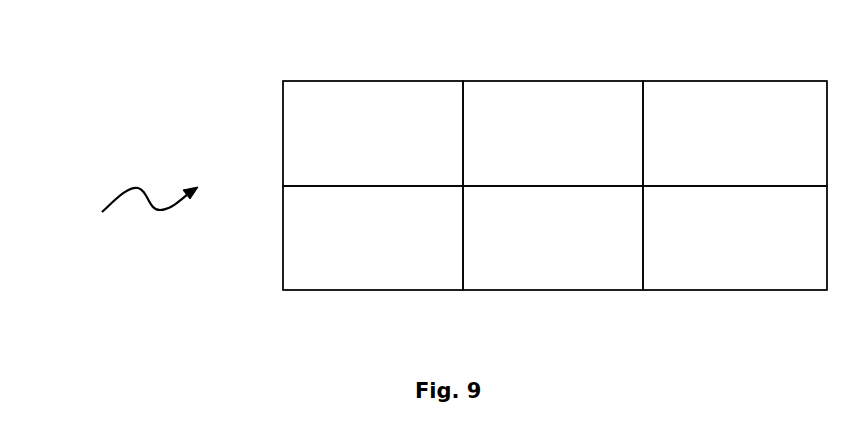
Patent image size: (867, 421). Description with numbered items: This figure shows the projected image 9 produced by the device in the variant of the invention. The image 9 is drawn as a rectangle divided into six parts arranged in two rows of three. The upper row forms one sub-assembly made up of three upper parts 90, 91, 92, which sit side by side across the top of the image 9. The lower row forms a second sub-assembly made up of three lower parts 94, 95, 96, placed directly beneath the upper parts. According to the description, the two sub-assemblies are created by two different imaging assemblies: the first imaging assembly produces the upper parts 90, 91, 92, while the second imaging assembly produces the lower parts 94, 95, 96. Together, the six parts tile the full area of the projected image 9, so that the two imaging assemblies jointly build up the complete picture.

The image 9 is at (117, 202).
The upper part 90 is at (403, 110).
The upper part 91 is at (574, 108).
The upper part 92 is at (747, 107).
The lower part 94 is at (375, 256).
The lower part 95 is at (545, 255).
The lower part 96 is at (718, 252).